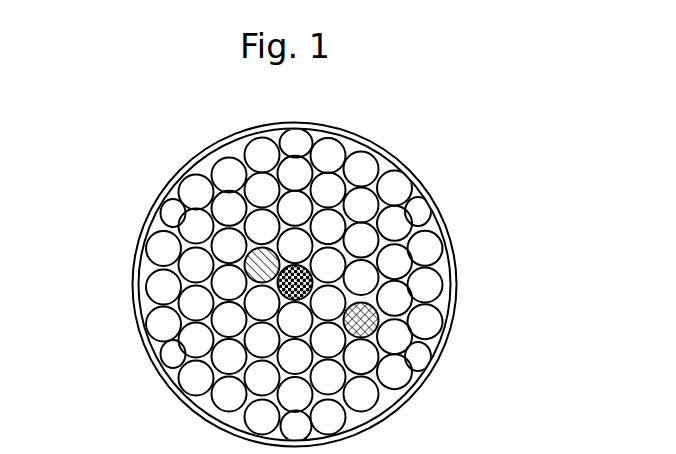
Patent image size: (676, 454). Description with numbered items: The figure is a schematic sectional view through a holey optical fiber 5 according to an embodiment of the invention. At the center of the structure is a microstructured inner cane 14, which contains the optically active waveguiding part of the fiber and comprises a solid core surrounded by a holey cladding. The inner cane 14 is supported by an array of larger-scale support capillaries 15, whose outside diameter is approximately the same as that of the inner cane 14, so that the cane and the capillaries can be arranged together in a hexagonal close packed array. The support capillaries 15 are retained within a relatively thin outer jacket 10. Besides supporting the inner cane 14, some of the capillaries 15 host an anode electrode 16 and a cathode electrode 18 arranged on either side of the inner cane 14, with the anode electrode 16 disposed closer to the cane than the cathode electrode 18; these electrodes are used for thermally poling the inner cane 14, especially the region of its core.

The cable 5 is at (129, 105).
The outer jacket 10 is at (164, 188).
The microstructured inner cane 14 is at (292, 300).
The support capillaries 15 is at (158, 308).
The anode electrode 16 is at (248, 256).
The cathode electrode 18 is at (413, 343).